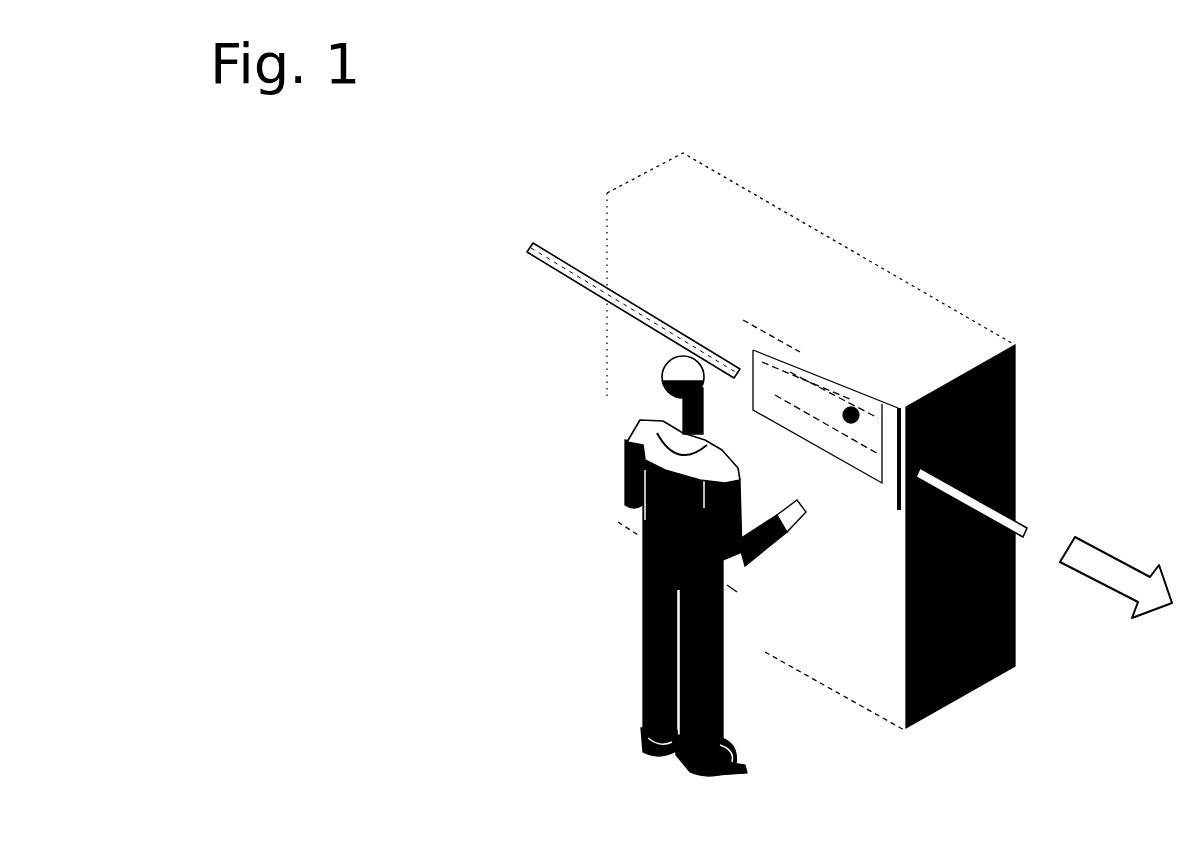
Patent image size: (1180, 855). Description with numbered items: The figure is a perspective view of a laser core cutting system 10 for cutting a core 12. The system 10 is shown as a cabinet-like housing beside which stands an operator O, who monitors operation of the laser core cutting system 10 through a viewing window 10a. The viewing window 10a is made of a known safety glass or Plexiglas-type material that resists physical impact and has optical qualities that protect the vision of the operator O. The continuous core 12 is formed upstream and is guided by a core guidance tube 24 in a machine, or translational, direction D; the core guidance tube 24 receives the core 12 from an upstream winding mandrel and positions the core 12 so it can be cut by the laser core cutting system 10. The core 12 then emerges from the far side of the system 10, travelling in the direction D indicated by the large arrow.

The laser core cutting system 10 is at (987, 178).
The viewing window 10a is at (853, 408).
The core 12 is at (925, 470).
The core guidance tube 24 is at (763, 385).
The operator O is at (648, 667).
The machine direction D is at (1116, 577).